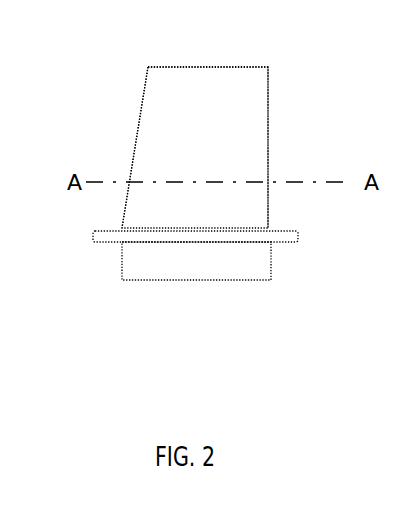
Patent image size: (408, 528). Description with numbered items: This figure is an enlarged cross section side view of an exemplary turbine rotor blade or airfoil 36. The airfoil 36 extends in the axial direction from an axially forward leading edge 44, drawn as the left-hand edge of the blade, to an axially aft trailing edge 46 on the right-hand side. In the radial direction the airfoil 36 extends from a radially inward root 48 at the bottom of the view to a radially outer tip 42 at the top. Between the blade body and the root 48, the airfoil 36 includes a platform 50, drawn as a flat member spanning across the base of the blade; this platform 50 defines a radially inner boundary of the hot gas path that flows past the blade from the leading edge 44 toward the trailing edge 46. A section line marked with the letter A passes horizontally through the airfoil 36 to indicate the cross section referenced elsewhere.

The turbine rotor blade or airfoil 36 is at (212, 150).
The radially outer tip 42 is at (203, 66).
The axially forward leading edge 44 is at (138, 142).
The axially aft trailing edge 46 is at (273, 156).
The radially inward root 48 is at (217, 281).
The platform 50 is at (115, 240).